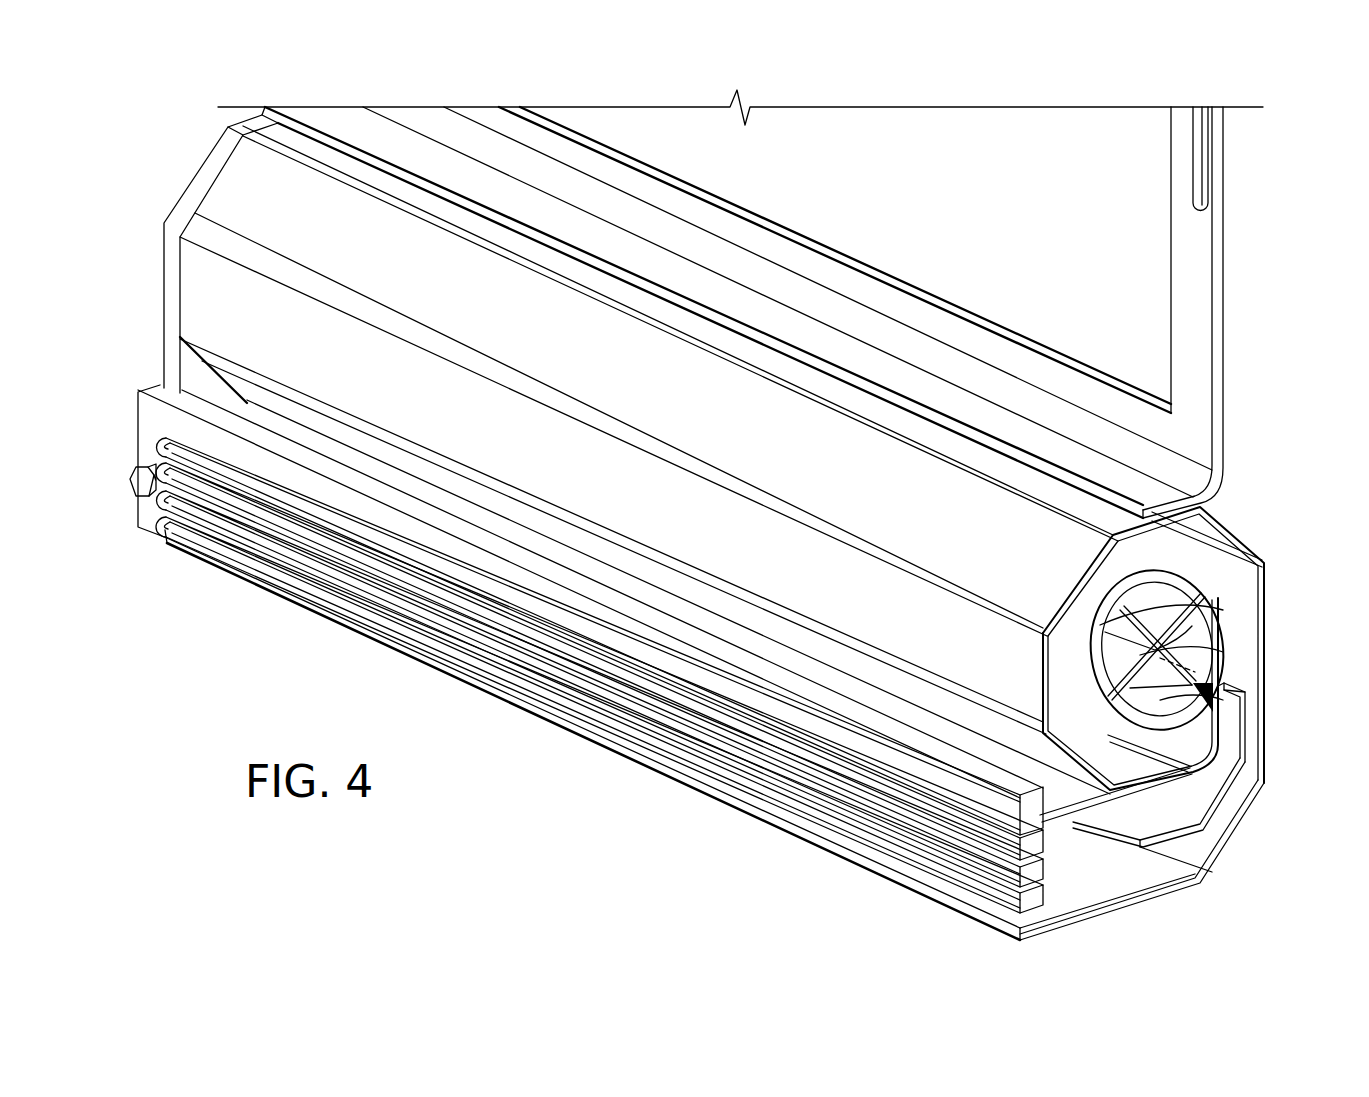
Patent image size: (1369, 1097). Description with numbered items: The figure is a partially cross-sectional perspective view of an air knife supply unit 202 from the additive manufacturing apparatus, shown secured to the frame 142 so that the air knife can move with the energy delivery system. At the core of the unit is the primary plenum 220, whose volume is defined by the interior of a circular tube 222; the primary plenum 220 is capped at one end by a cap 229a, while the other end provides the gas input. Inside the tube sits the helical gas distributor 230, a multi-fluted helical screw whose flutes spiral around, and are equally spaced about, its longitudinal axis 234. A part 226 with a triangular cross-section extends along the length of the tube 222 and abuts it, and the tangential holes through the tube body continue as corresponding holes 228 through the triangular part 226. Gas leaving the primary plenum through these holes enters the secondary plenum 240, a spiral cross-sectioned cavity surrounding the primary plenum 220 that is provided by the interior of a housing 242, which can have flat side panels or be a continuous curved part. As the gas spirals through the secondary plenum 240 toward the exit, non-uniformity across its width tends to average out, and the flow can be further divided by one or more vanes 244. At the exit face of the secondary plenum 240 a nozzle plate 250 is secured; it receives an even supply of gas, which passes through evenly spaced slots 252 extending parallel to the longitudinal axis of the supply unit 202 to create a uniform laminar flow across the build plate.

The supply unit 202 is at (174, 124).
The cap 229a is at (172, 274).
The frame 142 is at (1172, 180).
The circular tube 222 is at (1208, 580).
The primary plenum 220 is at (1200, 625).
The helical gas distributor 230 is at (1182, 640).
The longitudinal axis 234 is at (1135, 692).
The triangular part 226 is at (1219, 690).
The holes 228 is at (1238, 733).
The secondary plenum 240 is at (1133, 872).
The housing 242 is at (1107, 914).
The vanes 244 is at (1202, 827).
The nozzle plate 250 is at (688, 663).
The slots 252 is at (390, 633).